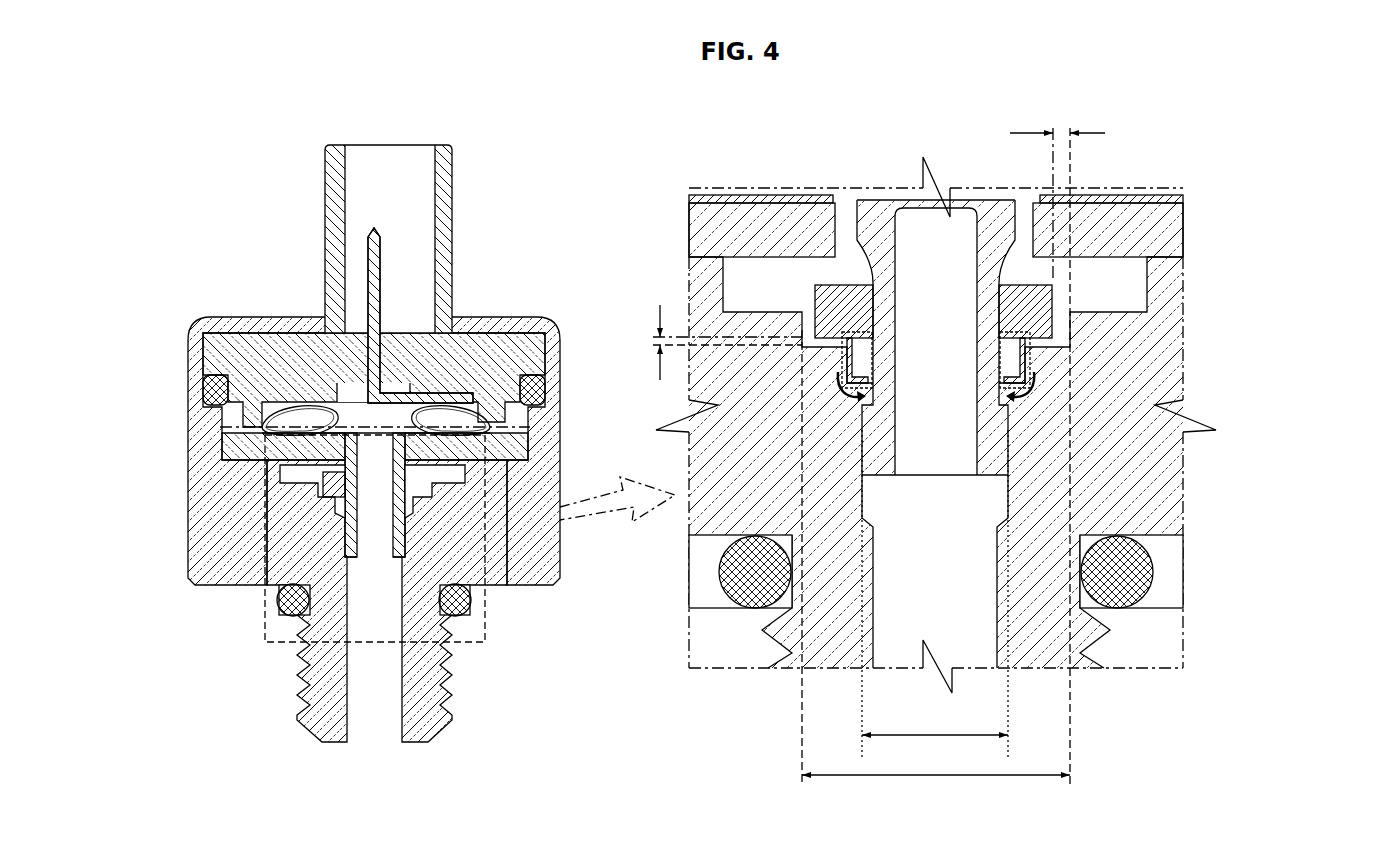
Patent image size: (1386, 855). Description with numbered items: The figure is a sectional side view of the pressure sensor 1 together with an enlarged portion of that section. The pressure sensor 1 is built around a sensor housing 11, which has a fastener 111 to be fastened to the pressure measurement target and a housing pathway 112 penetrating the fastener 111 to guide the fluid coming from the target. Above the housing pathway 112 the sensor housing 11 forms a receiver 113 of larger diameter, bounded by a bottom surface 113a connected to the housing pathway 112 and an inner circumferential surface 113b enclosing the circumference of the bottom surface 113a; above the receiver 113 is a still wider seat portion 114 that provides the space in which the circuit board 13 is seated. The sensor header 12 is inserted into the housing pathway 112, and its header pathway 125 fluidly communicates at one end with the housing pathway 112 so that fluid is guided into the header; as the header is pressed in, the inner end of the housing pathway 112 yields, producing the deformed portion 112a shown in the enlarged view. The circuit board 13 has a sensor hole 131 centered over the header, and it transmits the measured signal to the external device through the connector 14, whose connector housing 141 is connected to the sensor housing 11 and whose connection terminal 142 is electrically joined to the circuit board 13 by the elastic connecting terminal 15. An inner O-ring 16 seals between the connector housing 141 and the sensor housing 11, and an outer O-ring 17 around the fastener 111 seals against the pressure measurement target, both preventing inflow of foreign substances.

The pressure sensor 1 is at (395, 105).
The sensor housing 11 is at (228, 587).
The fastener 111 is at (1093, 635).
The housing pathway 112 is at (955, 510).
The deformed portion 112a is at (1036, 376).
The receiver 113 is at (1066, 343).
The bottom surface 113a is at (1032, 368).
The inner circumferential surface 113b is at (1067, 297).
The seat portion 114 is at (1178, 252).
The sensor header 12 is at (322, 587).
The header pathway 125 is at (380, 530).
The circuit board 13 is at (528, 448).
The sensor hole 131 is at (333, 447).
The connector 14 is at (394, 286).
The connector housing 141 is at (452, 203).
The connection terminal 142 is at (378, 275).
The connecting terminal 15 is at (487, 420).
The inner O-ring 16 is at (538, 391).
The outer O-ring 17 is at (278, 605).